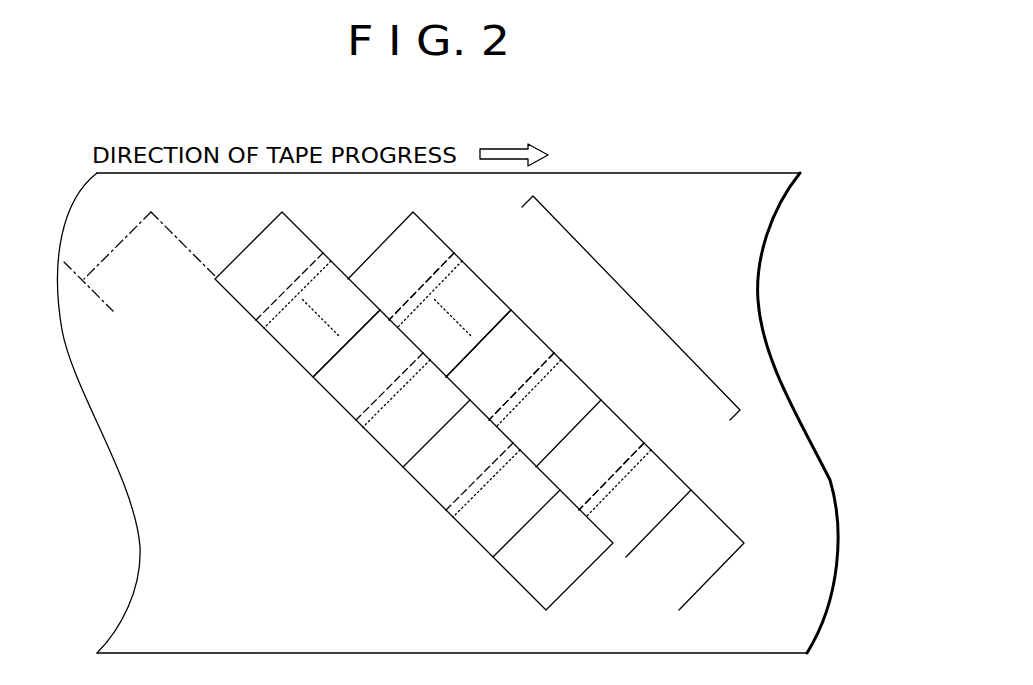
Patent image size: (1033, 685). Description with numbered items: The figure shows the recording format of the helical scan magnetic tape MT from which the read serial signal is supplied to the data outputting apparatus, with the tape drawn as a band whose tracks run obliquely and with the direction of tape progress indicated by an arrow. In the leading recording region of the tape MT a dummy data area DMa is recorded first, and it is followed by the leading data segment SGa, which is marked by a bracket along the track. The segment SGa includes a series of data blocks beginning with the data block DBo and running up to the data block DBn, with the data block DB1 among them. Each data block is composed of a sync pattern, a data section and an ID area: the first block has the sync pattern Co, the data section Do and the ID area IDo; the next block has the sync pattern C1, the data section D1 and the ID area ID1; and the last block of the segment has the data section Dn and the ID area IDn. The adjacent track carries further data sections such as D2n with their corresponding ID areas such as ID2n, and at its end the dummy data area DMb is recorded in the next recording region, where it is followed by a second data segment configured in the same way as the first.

The magnetic tape MT is at (771, 181).
The leading data segment SGa is at (631, 308).
The data section D2n is at (269, 266).
The data section Dn is at (401, 249).
The ID area IDn is at (455, 252).
The data block DBn is at (454, 274).
The ID area ID2n is at (261, 323).
The dummy data area DMb is at (553, 550).
The data section D1 is at (500, 344).
The ID area ID1 is at (557, 352).
The data block DB1 is at (554, 379).
The sync pattern C1 is at (564, 413).
The data section Do is at (605, 440).
The data block DBo is at (639, 465).
The ID area IDo is at (648, 443).
The sync pattern Co is at (654, 503).
The dummy data area DMa is at (695, 550).